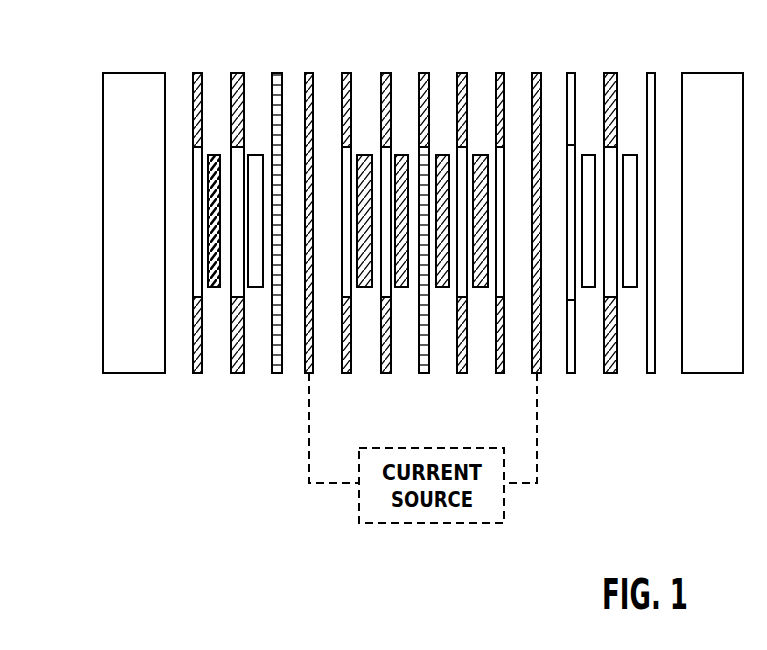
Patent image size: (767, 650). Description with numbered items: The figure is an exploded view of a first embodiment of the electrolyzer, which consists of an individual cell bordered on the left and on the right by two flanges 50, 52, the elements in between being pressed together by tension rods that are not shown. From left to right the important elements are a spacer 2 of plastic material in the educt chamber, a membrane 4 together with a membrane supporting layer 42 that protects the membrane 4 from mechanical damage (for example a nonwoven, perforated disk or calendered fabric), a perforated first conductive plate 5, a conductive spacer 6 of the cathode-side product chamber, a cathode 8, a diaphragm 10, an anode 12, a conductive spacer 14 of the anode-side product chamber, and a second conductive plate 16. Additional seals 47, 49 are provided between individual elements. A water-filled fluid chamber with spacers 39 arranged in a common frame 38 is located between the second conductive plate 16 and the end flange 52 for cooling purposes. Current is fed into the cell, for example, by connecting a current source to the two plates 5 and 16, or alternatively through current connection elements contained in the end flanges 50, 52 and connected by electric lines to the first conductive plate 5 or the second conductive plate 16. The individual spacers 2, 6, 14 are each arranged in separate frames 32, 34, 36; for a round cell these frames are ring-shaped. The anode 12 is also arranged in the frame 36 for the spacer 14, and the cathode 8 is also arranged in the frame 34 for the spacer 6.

The spacer 2 is at (209, 262).
The membrane 4 is at (274, 314).
The first conductive plate 5 is at (309, 80).
The spacer 6 is at (358, 279).
The cathode 8 is at (402, 284).
The diaphragm 10 is at (422, 286).
The anode 12 is at (443, 285).
The spacer 14 is at (483, 277).
The second conductive plate 16 is at (537, 80).
The frame 32 is at (238, 80).
The frame 34 is at (385, 80).
The frame 36 is at (462, 80).
The common frame 38 is at (610, 80).
The spacers 39 is at (591, 284).
The membrane supporting layer 42 is at (255, 276).
The seal 47 is at (342, 368).
The seal 49 is at (500, 374).
The flange 50 is at (118, 85).
The flange 52 is at (723, 83).